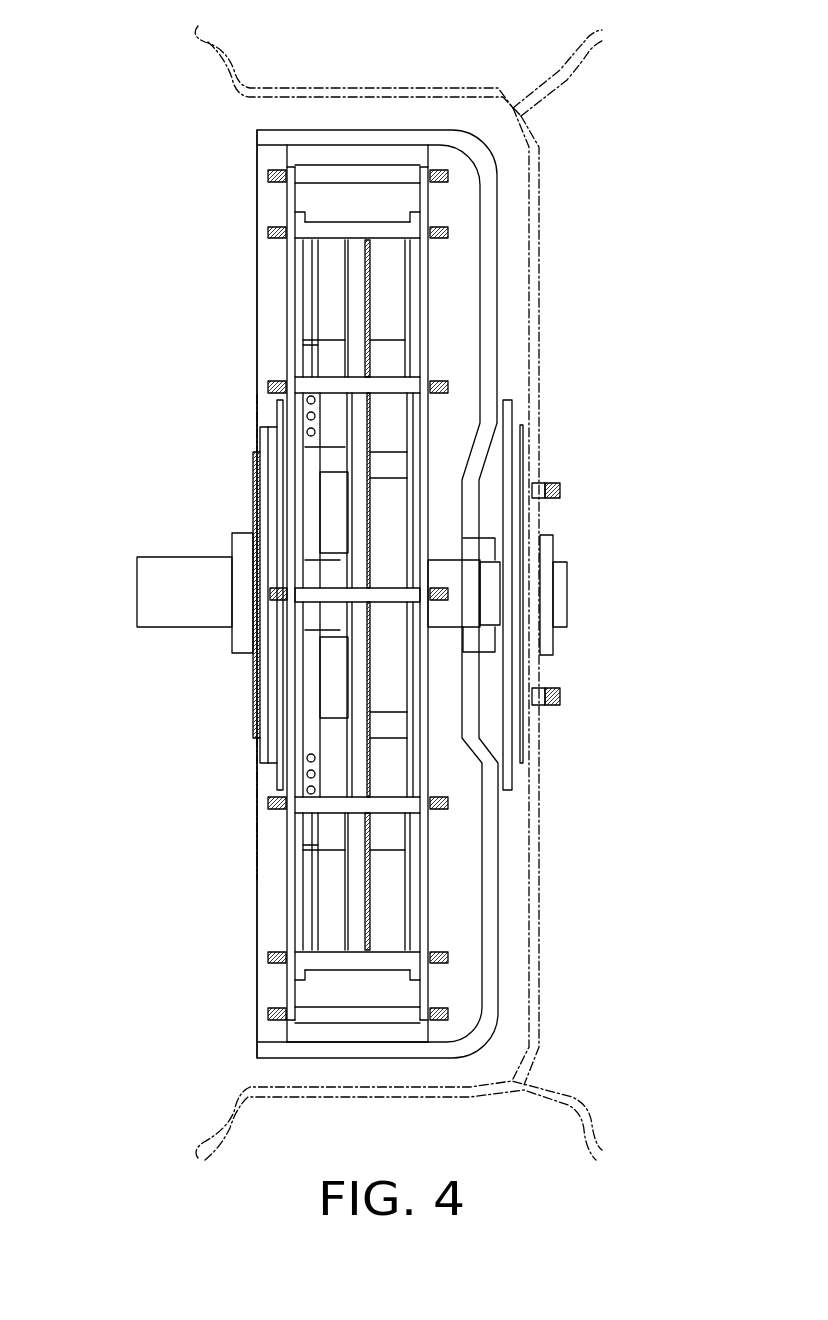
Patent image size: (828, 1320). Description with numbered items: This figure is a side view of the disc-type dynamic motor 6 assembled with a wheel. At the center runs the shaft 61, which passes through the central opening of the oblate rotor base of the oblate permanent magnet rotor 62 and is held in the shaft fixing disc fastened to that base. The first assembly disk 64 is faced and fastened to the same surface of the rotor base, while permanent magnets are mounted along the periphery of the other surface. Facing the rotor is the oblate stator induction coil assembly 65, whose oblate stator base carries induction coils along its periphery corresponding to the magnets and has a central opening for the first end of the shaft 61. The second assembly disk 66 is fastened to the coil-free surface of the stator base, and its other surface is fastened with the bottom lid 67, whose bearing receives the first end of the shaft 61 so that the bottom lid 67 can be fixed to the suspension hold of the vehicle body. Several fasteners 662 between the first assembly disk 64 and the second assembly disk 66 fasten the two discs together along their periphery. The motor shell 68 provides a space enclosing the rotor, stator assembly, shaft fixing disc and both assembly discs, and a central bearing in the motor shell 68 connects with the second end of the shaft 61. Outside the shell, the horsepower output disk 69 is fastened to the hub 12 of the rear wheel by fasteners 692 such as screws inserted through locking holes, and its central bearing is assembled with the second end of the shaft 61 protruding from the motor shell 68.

The hub 12 is at (545, 918).
The disc-type dynamic motor 6 is at (272, 782).
The shaft 61 is at (148, 578).
The oblate permanent magnet rotor 62 is at (385, 358).
The first assembly disk 64 is at (430, 988).
The oblate stator induction coil assembly 65 is at (330, 447).
The second assembly disk 66 is at (260, 912).
The fasteners 662 is at (338, 1010).
The bottom lid 67 is at (247, 655).
The motor shell 68 is at (345, 147).
The horsepower output disk 69 is at (517, 465).
The fasteners 692 is at (553, 710).